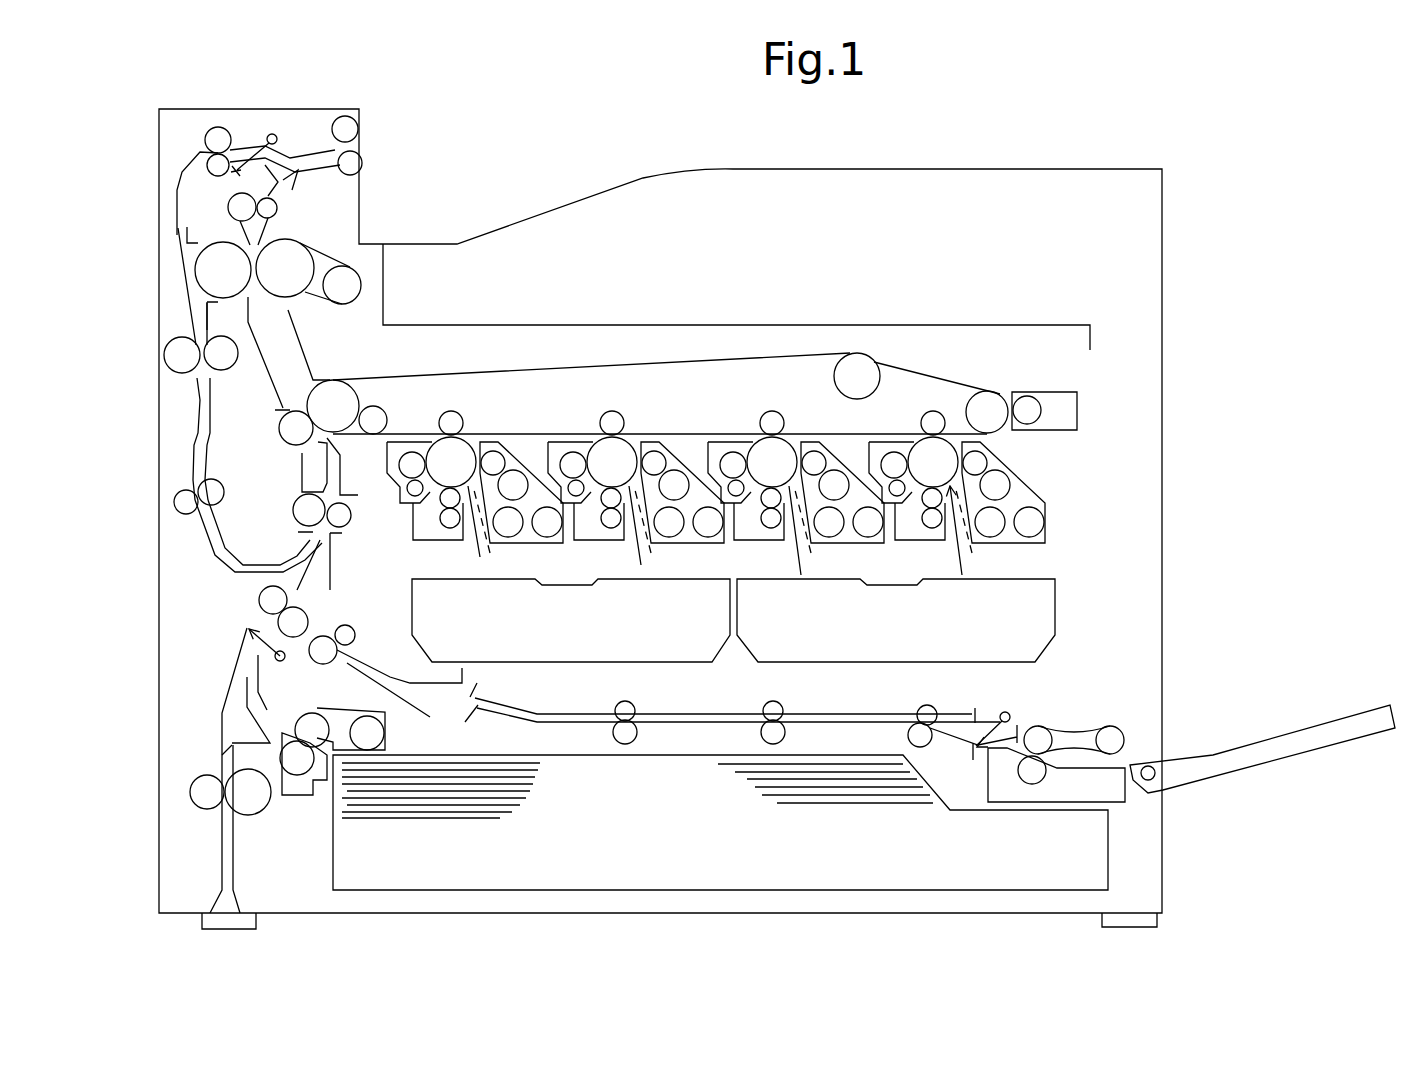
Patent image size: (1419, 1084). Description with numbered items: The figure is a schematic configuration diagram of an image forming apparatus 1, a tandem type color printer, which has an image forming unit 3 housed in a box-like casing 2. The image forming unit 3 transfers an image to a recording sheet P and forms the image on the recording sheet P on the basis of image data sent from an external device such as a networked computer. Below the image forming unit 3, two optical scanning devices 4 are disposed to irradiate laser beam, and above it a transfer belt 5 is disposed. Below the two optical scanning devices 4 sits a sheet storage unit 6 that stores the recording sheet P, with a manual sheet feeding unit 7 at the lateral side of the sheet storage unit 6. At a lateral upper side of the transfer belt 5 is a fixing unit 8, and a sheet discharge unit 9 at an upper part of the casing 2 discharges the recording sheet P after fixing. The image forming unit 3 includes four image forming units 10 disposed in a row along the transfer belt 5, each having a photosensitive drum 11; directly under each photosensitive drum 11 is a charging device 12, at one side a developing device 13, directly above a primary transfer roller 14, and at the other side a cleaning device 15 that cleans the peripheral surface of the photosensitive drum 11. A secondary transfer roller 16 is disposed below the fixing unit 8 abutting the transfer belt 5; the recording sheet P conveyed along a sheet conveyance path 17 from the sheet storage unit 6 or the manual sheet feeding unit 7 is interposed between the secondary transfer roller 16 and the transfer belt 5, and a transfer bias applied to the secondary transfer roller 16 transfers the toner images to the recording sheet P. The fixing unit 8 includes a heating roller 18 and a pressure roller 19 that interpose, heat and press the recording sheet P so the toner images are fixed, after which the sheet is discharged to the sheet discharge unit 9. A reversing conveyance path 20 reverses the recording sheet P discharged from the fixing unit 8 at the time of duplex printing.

The image forming apparatus 1 is at (753, 151).
The casing 2 is at (1077, 170).
The image forming unit 3 is at (1066, 472).
The optical scanning devices 4 is at (797, 664).
The transfer belt 5 is at (677, 372).
The sheet storage unit 6 is at (567, 893).
The manual sheet feeding unit 7 is at (1313, 728).
The fixing unit 8 is at (186, 261).
The sheet discharge unit 9 is at (560, 205).
The image forming units 10 is at (694, 455).
The photosensitive drum 11 is at (428, 480).
The charging device 12 is at (454, 532).
The developing device 13 is at (514, 548).
The primary transfer roller 14 is at (452, 411).
The cleaning device 15 is at (404, 436).
The secondary transfer roller 16 is at (280, 425).
The sheet conveyance path 17 is at (241, 629).
The heating roller 18 is at (313, 255).
The pressure roller 19 is at (196, 280).
The reversing conveyance path 20 is at (186, 412).
The recording sheet P is at (847, 780).